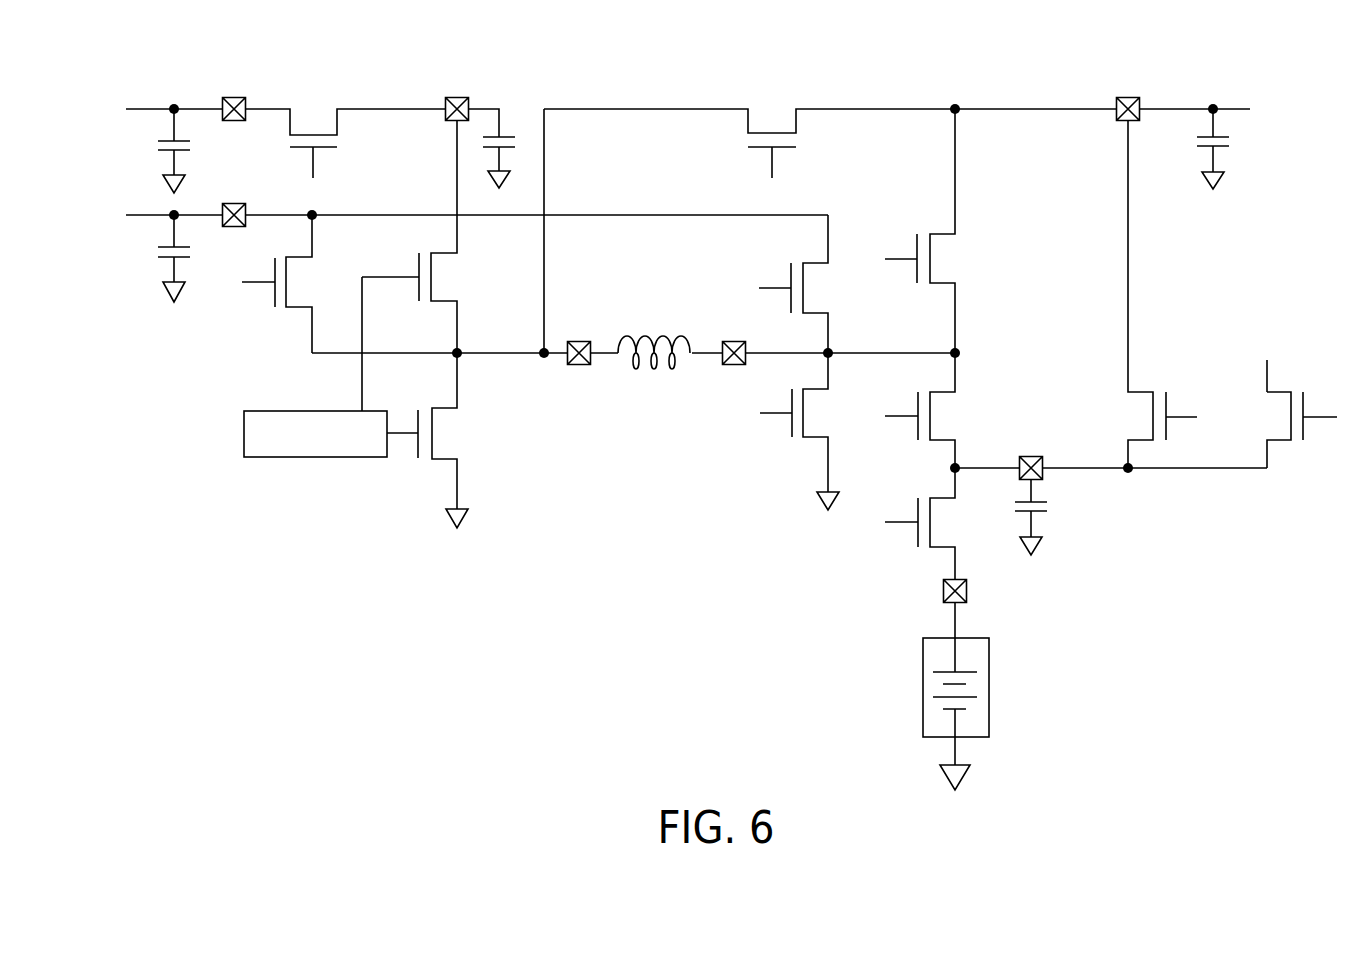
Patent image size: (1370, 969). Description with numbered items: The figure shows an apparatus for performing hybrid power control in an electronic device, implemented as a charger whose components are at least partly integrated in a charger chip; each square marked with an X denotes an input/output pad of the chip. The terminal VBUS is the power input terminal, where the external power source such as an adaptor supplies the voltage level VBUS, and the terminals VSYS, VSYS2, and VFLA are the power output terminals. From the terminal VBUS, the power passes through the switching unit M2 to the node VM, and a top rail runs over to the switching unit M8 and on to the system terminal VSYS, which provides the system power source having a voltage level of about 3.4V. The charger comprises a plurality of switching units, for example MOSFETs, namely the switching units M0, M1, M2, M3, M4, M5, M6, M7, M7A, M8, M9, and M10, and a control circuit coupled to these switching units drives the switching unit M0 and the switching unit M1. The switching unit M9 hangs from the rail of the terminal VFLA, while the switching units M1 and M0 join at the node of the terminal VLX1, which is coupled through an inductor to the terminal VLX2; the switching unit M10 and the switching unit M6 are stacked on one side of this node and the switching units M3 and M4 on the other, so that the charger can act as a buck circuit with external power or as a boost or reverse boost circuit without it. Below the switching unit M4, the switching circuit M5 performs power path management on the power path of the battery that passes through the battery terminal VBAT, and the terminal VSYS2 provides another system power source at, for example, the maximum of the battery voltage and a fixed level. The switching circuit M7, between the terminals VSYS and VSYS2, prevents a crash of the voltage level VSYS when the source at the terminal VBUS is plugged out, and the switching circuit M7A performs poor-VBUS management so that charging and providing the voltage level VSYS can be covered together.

The terminal VBUS is at (749, 229).
The switching unit M2 is at (345, 135).
The VM node pad VM is at (454, 92).
The terminal VFLA is at (235, 199).
The switching unit M9 is at (291, 284).
The switching unit M1 is at (423, 265).
The switching unit M0 is at (435, 440).
The terminal VLX1 is at (567, 371).
The terminal VLX2 is at (734, 338).
The switching unit M8 is at (830, 134).
The switching unit M10 is at (815, 284).
The switching unit M3 is at (933, 231).
The switching unit M6 is at (807, 431).
The switching unit M4 is at (933, 410).
The switching circuit M5 is at (933, 524).
The terminal VSYS2 is at (1111, 491).
The terminal VSYS is at (1129, 94).
The voltage level of 3.4 volts 3.4V is at (1216, 88).
The switching circuit M7 is at (1148, 294).
The switching circuit M7A is at (1277, 430).
The terminal VBAT is at (930, 683).